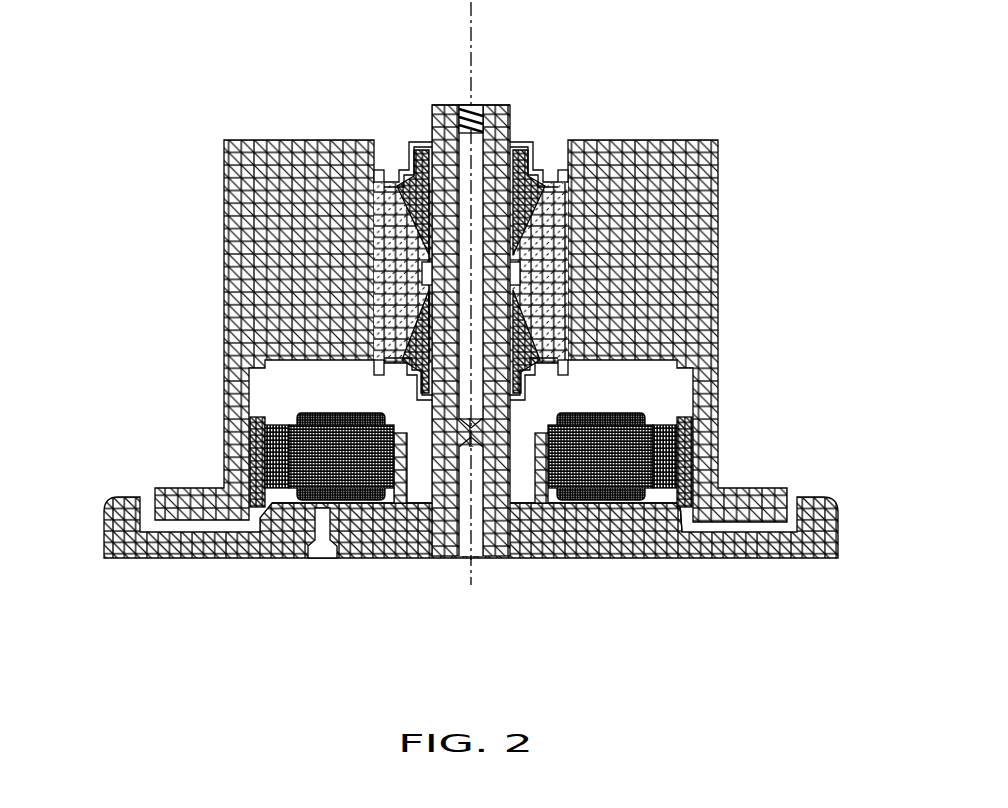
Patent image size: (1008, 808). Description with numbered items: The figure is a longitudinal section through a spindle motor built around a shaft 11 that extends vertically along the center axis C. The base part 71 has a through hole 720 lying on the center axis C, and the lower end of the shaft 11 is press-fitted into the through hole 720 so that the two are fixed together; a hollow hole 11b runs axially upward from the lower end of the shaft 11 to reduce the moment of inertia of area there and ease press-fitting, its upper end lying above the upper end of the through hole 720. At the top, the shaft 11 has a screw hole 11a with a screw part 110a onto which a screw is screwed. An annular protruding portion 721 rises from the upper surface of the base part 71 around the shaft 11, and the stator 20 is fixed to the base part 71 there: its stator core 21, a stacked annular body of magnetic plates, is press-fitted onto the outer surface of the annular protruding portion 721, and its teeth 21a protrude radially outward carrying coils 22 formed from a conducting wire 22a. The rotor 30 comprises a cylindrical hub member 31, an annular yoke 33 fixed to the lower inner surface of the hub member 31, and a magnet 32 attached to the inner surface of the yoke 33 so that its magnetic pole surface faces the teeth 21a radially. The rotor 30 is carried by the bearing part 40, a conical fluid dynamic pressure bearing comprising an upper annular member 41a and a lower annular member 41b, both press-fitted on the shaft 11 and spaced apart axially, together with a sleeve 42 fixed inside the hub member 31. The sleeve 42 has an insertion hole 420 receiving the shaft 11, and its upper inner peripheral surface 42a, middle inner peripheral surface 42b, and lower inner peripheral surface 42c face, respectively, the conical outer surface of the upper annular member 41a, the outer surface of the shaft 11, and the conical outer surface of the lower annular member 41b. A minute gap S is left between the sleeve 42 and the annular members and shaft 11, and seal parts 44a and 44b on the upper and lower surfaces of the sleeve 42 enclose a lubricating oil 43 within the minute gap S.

The shaft 11 is at (489, 336).
The screw hole 11a is at (480, 124).
The hollow hole 11b is at (421, 552).
The screw part 110a is at (492, 120).
The stator 20 is at (700, 331).
The stator core 21 is at (577, 447).
The teeth 21a is at (620, 477).
The coils 22 is at (620, 410).
The conducting wire 22a is at (333, 412).
The rotor 30 is at (206, 330).
The hub member 31 is at (237, 468).
The magnet 32 is at (270, 442).
The yoke 33 is at (256, 420).
The bearing part 40 is at (514, 221).
The upper annular member 41a is at (533, 207).
The lower annular member 41b is at (533, 340).
The sleeve 42 is at (521, 262).
The upper inner peripheral surface 42a is at (417, 213).
The middle inner peripheral surface 42b is at (417, 280).
The lower inner peripheral surface 42c is at (405, 348).
The lubricating oil 43 is at (521, 232).
The seal part 44a is at (523, 136).
The seal part 44b is at (538, 388).
The base part 71 is at (722, 540).
The through hole 720 is at (548, 540).
The annular protruding portion 721 is at (363, 556).
The insertion hole 420 is at (543, 188).
The center axis C is at (466, 590).
The minute gap S is at (418, 232).